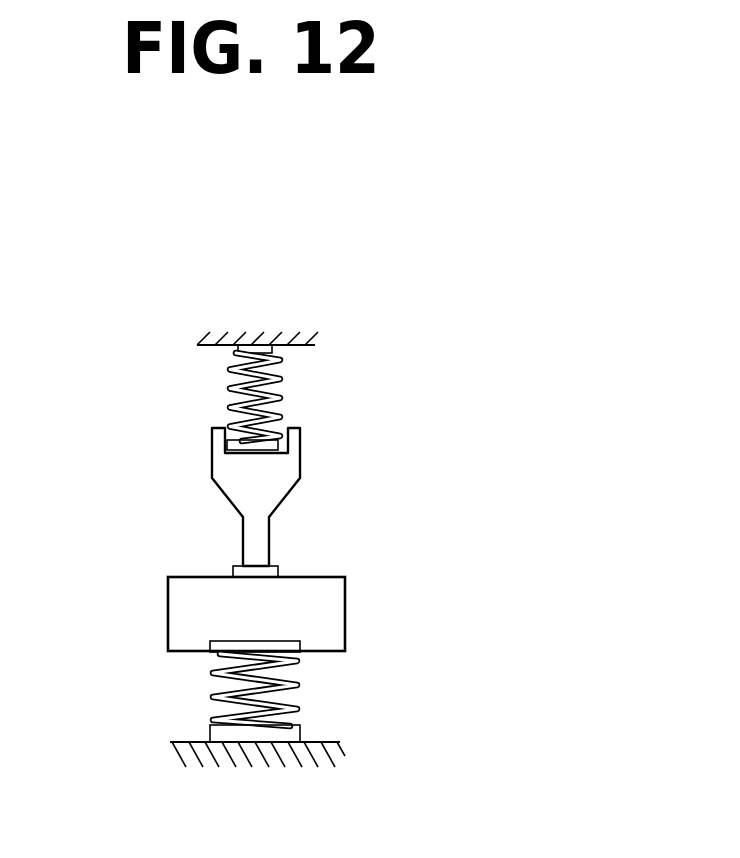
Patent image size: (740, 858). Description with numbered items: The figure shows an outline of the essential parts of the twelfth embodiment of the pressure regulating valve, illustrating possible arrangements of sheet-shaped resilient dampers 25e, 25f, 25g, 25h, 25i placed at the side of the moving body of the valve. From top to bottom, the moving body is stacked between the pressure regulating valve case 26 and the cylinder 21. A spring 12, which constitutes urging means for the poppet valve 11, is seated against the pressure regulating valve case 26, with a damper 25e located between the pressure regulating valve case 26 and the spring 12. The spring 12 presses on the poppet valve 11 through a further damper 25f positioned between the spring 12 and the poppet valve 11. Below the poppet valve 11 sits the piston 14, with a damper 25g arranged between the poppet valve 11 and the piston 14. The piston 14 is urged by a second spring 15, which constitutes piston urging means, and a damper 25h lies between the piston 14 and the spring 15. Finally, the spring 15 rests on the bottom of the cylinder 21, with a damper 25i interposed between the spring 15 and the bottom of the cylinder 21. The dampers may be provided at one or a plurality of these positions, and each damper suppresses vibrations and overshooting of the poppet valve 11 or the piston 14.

The pressure regulating valve case 26 is at (278, 339).
The damper 25e is at (238, 350).
The spring 12 is at (282, 398).
The poppet valve 11 is at (288, 467).
The damper 25f is at (252, 450).
The damper 25g is at (232, 570).
The piston 14 is at (322, 623).
The damper 25h is at (213, 651).
The spring 15 is at (300, 677).
The damper 25i is at (213, 733).
The cylinder 21 is at (303, 752).